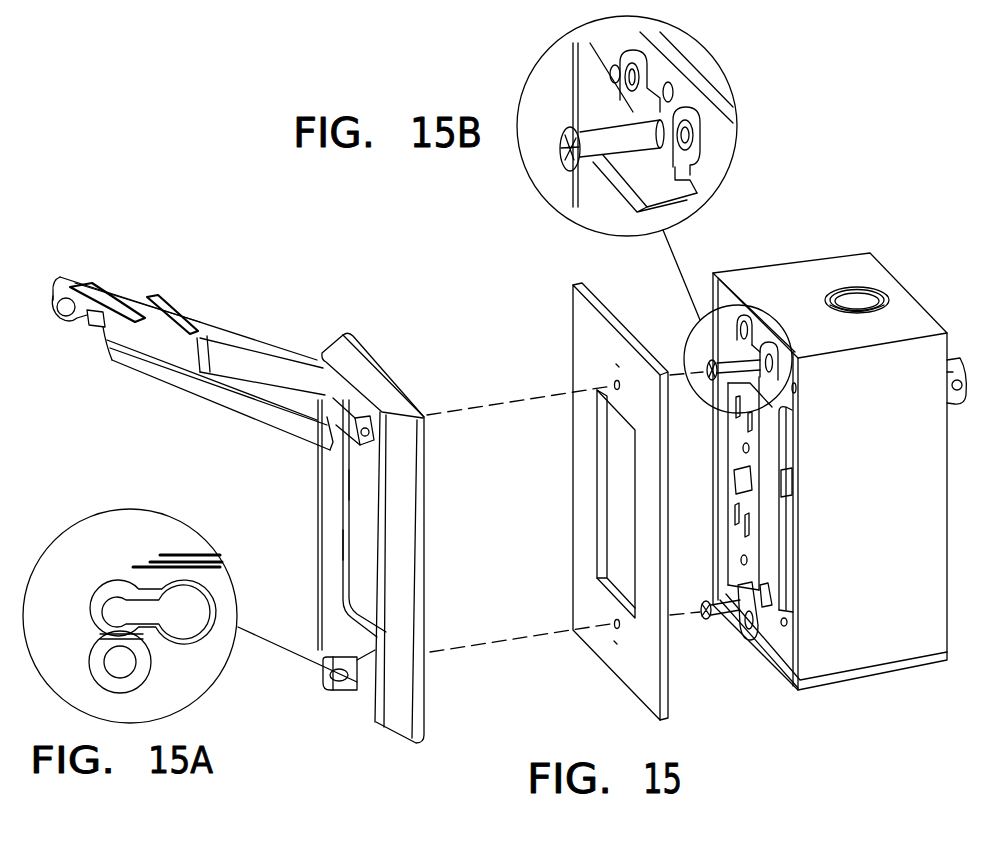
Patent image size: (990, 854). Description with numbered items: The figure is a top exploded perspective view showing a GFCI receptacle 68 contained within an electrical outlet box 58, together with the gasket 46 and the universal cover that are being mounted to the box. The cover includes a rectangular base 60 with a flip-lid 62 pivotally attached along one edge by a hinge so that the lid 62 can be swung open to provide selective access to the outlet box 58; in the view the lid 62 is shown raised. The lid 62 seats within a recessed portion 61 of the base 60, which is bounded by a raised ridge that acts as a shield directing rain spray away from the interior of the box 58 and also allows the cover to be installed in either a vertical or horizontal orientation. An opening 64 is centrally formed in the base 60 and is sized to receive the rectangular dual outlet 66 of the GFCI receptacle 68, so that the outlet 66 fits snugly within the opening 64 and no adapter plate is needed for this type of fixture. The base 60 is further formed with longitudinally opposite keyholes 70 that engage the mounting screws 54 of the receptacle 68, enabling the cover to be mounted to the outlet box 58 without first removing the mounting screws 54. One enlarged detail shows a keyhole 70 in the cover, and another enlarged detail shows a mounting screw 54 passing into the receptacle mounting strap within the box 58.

In FIG. 15, the gasket 46 is at (638, 692).
In FIG. 15B, the mounting screw 54 is at (607, 150).
In FIG. 15, the electrical outlet box 58 is at (817, 280).
In FIG. 15, the rectangular base 60 is at (400, 713).
In FIG. 15, the recessed portion 61 is at (347, 543).
In FIG. 15, the flip-lid 62 is at (107, 300).
In FIG. 15, the opening 64 is at (350, 485).
In FIG. 15, the rectangular dual outlet 66 is at (768, 568).
In FIG. 15, the GFCI receptacle 68 is at (790, 545).
In FIG. 15A, the keyhole 70 is at (210, 633).